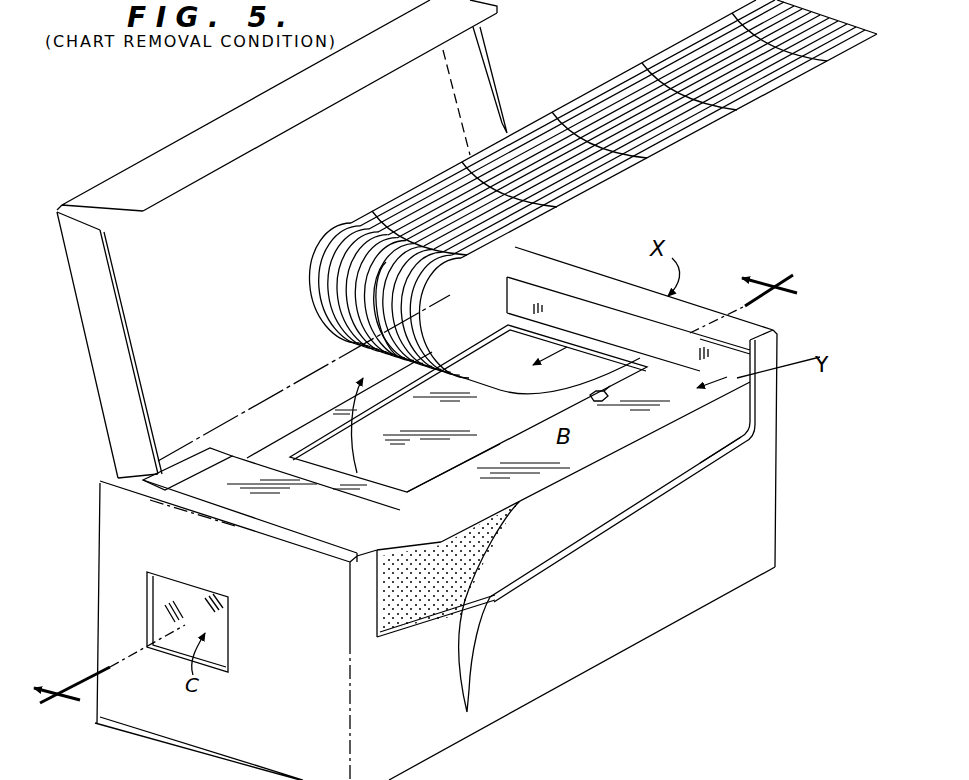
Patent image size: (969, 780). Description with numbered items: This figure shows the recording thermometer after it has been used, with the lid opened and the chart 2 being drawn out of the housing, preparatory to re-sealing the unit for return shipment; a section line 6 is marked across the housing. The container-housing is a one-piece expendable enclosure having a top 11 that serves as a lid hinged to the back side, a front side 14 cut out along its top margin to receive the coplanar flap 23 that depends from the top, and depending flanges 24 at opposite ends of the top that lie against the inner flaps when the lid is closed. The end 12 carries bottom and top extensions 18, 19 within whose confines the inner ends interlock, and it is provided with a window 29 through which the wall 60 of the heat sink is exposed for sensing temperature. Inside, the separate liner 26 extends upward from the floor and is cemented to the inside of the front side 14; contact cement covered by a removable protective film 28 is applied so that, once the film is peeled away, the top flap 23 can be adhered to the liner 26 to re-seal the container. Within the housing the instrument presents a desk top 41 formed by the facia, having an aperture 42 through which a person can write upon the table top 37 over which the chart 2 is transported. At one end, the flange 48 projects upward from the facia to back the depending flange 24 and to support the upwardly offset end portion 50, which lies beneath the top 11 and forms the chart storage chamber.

The chart strip 2 is at (714, 126).
The section line 6- 6 is at (415, 501).
The top 11 is at (216, 291).
The end 12 is at (236, 630).
The front side 14 is at (583, 513).
The bottom extension 18 is at (118, 481).
The top extension 19 is at (690, 310).
The coplanar flap 23 is at (268, 95).
The depending flange 24 is at (478, 82).
The liner 26 is at (385, 578).
The removable protective film 28 is at (465, 655).
The window 29 is at (192, 587).
The table top 37 is at (468, 408).
The desk top 41 is at (705, 402).
The aperture 42 is at (470, 456).
The flange 48 is at (567, 302).
The upwardly offset end portion 50 is at (448, 440).
The wall 60 is at (218, 637).